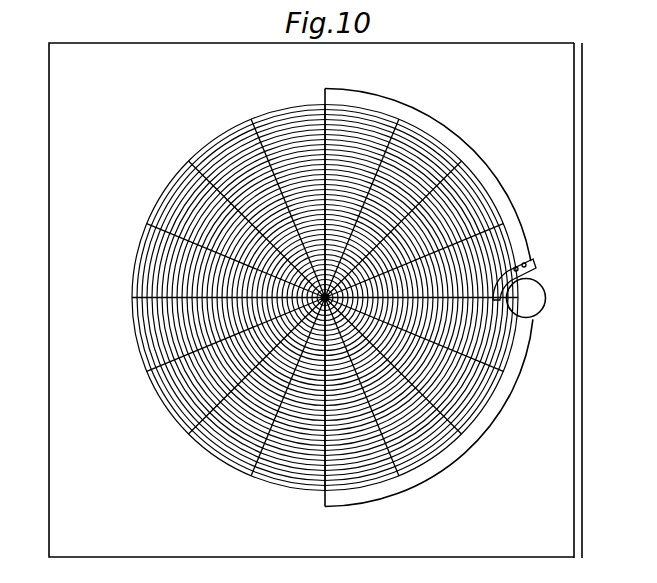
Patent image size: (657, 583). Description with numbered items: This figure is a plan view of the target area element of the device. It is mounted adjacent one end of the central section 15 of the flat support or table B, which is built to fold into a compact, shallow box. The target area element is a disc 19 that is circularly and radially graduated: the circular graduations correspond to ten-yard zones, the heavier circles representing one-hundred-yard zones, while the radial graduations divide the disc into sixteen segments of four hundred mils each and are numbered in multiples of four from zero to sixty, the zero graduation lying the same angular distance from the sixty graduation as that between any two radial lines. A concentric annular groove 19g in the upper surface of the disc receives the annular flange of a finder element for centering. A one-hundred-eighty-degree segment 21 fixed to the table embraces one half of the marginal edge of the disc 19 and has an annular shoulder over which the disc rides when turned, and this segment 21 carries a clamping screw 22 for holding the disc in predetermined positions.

The central section 15 is at (62, 374).
The disc 19 is at (218, 454).
The annular groove 19g is at (300, 280).
The 180 degree segment 21 is at (492, 180).
The clamping screw 22 is at (531, 303).
The support or table B is at (560, 430).